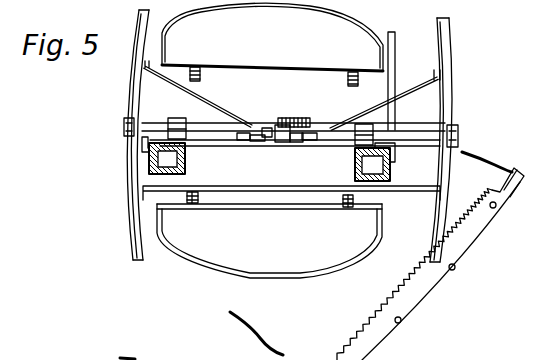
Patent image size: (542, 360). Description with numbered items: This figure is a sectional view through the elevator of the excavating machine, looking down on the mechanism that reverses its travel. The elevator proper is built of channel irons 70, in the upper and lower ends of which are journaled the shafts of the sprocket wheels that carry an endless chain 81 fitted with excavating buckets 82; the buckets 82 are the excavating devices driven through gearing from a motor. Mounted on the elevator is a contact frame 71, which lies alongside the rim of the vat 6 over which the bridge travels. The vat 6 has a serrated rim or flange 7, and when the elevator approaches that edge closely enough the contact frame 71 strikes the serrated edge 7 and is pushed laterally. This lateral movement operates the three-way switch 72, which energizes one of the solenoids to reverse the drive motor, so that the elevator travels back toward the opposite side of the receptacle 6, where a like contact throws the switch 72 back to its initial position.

The vat 6 is at (316, 256).
The serrated rim or flange 7 is at (433, 283).
The channel irons 70 is at (165, 163).
The contact frame 71 is at (127, 155).
The three-way switch 72 is at (271, 129).
The endless chain 81 is at (348, 80).
The excavating buckets 82 is at (270, 140).